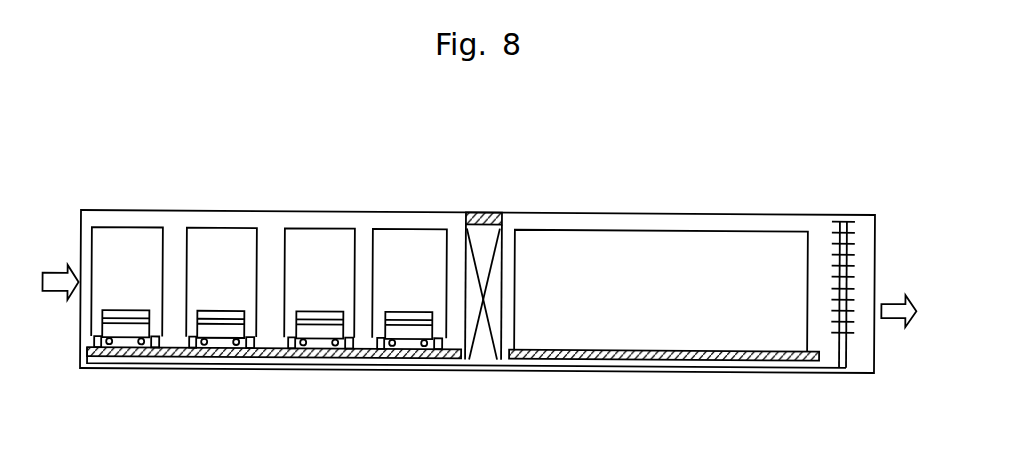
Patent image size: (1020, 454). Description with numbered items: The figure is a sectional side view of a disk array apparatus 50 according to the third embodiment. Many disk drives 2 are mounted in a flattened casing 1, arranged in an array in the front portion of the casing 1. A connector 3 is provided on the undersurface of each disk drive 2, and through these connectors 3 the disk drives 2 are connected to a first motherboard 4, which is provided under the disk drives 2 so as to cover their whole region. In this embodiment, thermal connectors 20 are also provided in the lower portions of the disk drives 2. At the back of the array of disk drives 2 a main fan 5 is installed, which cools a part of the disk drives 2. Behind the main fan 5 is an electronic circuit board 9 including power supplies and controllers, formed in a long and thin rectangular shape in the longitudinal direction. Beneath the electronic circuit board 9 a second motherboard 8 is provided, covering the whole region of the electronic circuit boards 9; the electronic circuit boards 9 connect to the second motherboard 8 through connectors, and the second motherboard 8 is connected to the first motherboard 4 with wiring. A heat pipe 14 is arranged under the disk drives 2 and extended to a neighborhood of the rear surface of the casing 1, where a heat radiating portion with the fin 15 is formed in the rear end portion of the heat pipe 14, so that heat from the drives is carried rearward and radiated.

The casing 1 is at (190, 209).
The disk drive 2 is at (208, 252).
The connector 3 is at (155, 343).
The first motherboard 4 is at (278, 358).
The main fan 5 is at (493, 233).
The second motherboard 8 is at (640, 355).
The electronic circuit board 9 is at (690, 270).
The heat pipe 14 is at (385, 358).
The fin 15 is at (850, 295).
The thermal connector 20 is at (125, 325).
The disk array apparatus 50 is at (690, 189).